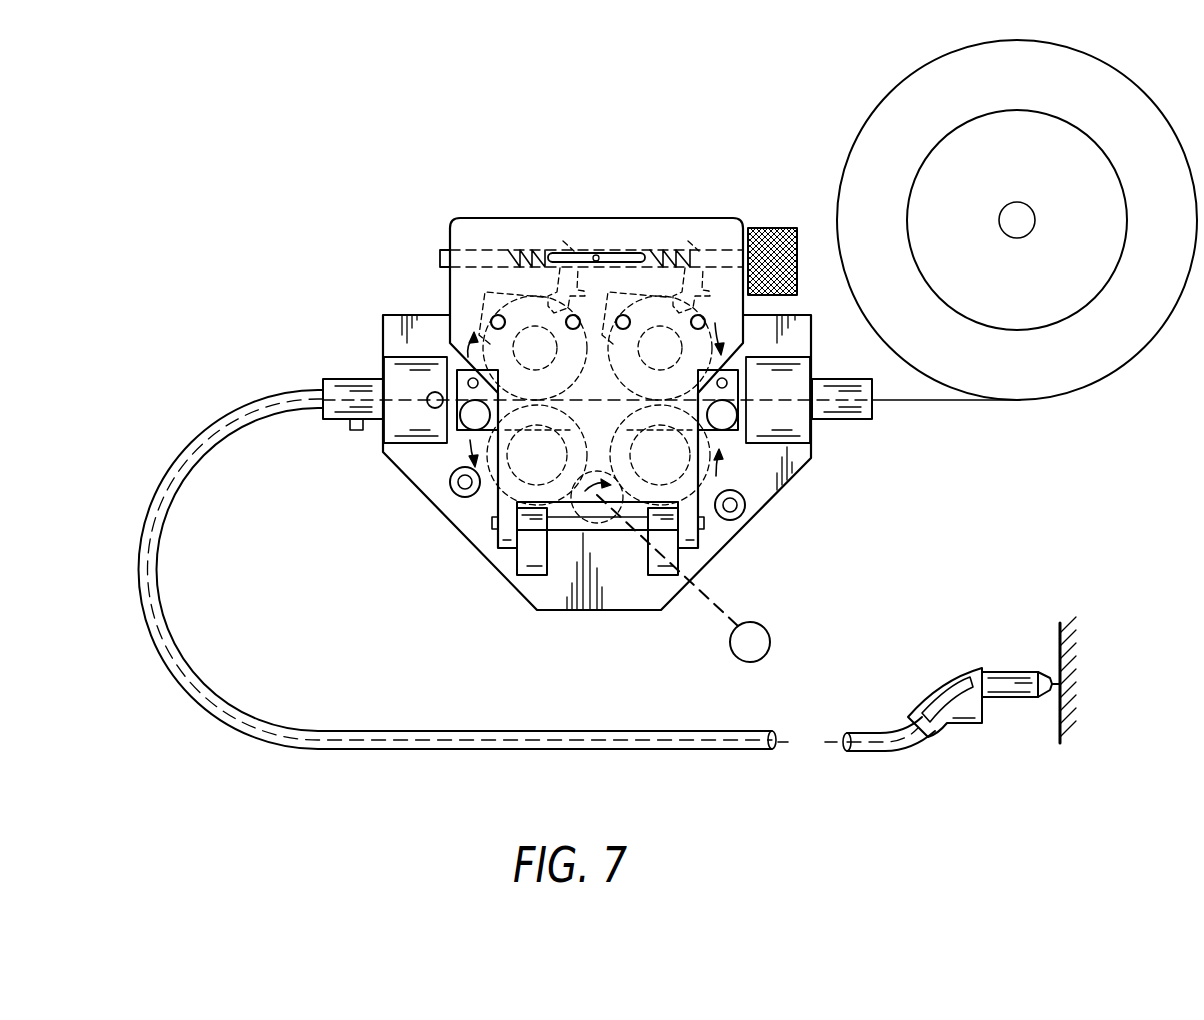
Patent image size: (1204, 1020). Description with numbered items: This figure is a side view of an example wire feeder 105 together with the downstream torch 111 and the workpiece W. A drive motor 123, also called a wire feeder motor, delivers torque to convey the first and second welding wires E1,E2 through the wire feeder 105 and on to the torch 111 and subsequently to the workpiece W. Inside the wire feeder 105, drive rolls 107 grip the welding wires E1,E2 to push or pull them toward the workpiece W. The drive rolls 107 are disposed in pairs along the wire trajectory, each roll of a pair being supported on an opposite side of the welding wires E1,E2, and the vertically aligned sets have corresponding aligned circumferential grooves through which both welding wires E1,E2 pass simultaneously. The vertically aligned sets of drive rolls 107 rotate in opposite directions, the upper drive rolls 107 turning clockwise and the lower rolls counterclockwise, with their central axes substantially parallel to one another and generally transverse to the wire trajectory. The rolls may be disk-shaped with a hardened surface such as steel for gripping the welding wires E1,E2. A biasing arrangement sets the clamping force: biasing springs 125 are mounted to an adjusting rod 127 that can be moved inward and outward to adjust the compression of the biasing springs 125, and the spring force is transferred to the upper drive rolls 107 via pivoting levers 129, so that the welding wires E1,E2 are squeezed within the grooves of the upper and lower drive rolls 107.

The wire feeder 105 is at (537, 160).
The drive rolls 107 is at (487, 342).
The torch 111 is at (980, 668).
The drive motor 123 is at (771, 634).
The biasing springs 125 is at (523, 253).
The adjusting rod 127 is at (449, 256).
The pivoting levers 129 is at (575, 306).
The first and second welding wires E1,E2 is at (920, 402).
The workpiece W is at (1084, 668).